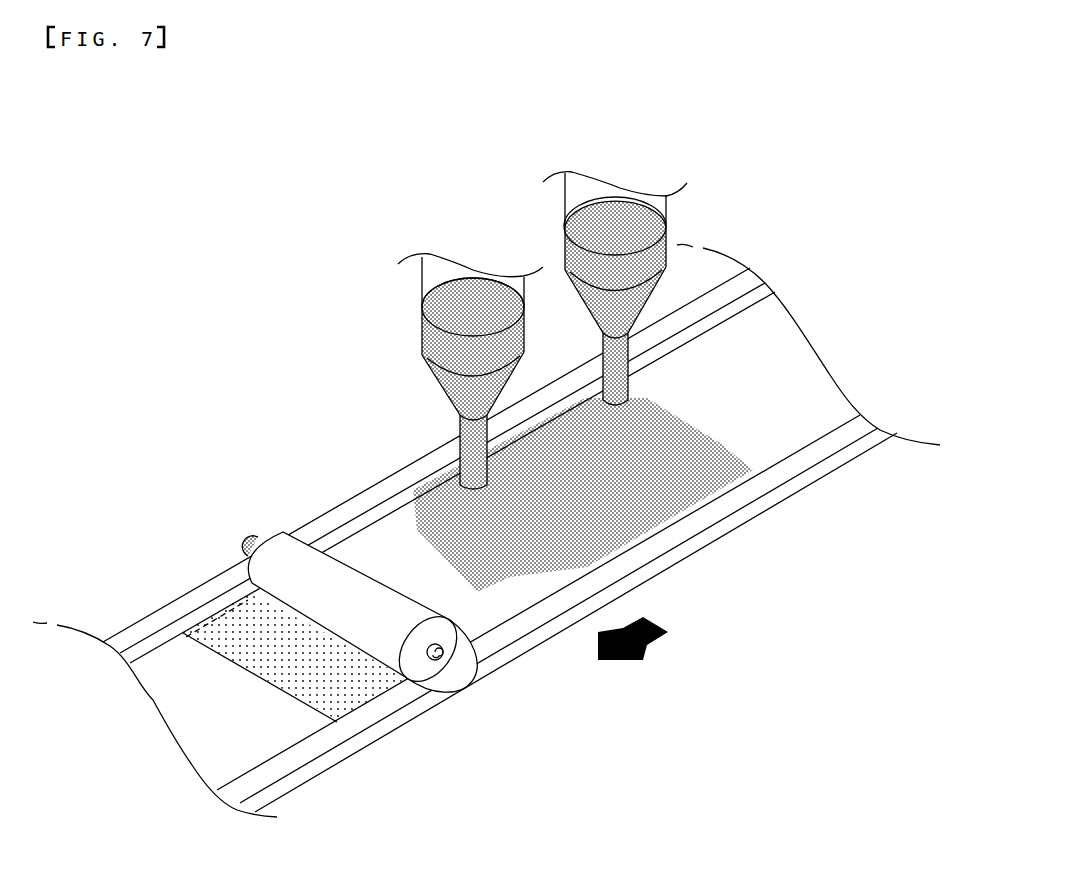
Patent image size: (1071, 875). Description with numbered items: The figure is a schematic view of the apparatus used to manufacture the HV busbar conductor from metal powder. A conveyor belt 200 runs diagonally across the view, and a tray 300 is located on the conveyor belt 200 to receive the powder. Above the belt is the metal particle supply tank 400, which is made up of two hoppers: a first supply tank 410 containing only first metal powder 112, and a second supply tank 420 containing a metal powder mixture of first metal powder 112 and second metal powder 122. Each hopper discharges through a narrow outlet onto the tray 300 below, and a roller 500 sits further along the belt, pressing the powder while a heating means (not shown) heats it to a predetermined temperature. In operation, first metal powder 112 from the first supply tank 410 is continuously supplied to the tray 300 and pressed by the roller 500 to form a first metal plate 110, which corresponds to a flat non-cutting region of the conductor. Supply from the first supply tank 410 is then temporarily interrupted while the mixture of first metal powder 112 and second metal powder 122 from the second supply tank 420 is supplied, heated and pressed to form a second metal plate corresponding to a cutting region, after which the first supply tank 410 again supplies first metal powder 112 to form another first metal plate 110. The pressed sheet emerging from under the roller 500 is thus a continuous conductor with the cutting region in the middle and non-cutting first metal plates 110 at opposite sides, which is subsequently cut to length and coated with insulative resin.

The first metal plate 110 is at (171, 653).
The first metal powder 112 is at (422, 338).
The second metal powder 122 is at (442, 393).
The conveyor belt 200 is at (763, 507).
The tray 300 is at (473, 632).
The metal particle supply tank 400 is at (605, 112).
The first supply tank 410 is at (584, 188).
The second supply tank 420 is at (454, 303).
The roller 500 is at (278, 540).